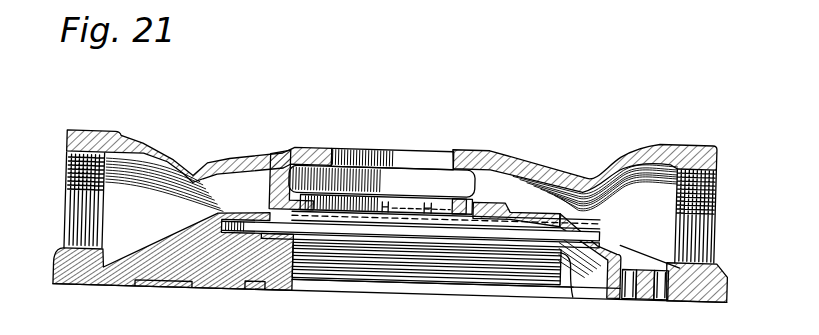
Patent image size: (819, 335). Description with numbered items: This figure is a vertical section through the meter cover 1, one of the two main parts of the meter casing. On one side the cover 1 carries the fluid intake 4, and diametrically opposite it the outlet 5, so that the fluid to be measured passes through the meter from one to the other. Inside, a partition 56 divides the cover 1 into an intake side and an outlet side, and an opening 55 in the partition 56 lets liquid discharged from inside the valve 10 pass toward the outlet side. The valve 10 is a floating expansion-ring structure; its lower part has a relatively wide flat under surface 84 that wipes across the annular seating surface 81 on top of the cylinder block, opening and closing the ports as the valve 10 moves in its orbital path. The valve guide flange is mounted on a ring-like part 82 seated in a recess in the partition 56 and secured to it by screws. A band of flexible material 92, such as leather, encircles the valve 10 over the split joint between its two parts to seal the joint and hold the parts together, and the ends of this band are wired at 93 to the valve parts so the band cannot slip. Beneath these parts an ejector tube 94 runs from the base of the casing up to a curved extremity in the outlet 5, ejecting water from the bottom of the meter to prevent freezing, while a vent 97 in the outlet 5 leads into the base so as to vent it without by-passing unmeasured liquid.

The cover 1 is at (202, 168).
The fluid intake 4 is at (88, 196).
The outlet 5 is at (692, 218).
The valve 10 is at (351, 266).
The opening 55 is at (360, 211).
The partition 56 is at (600, 228).
The annular seating surface 81 is at (232, 236).
The ring-like part 82 is at (460, 203).
The flat under surface 84 is at (492, 284).
The band of flexible material 92 is at (567, 282).
The wires 93 is at (296, 246).
The ejector tube 94 is at (648, 287).
The vent 97 is at (701, 262).